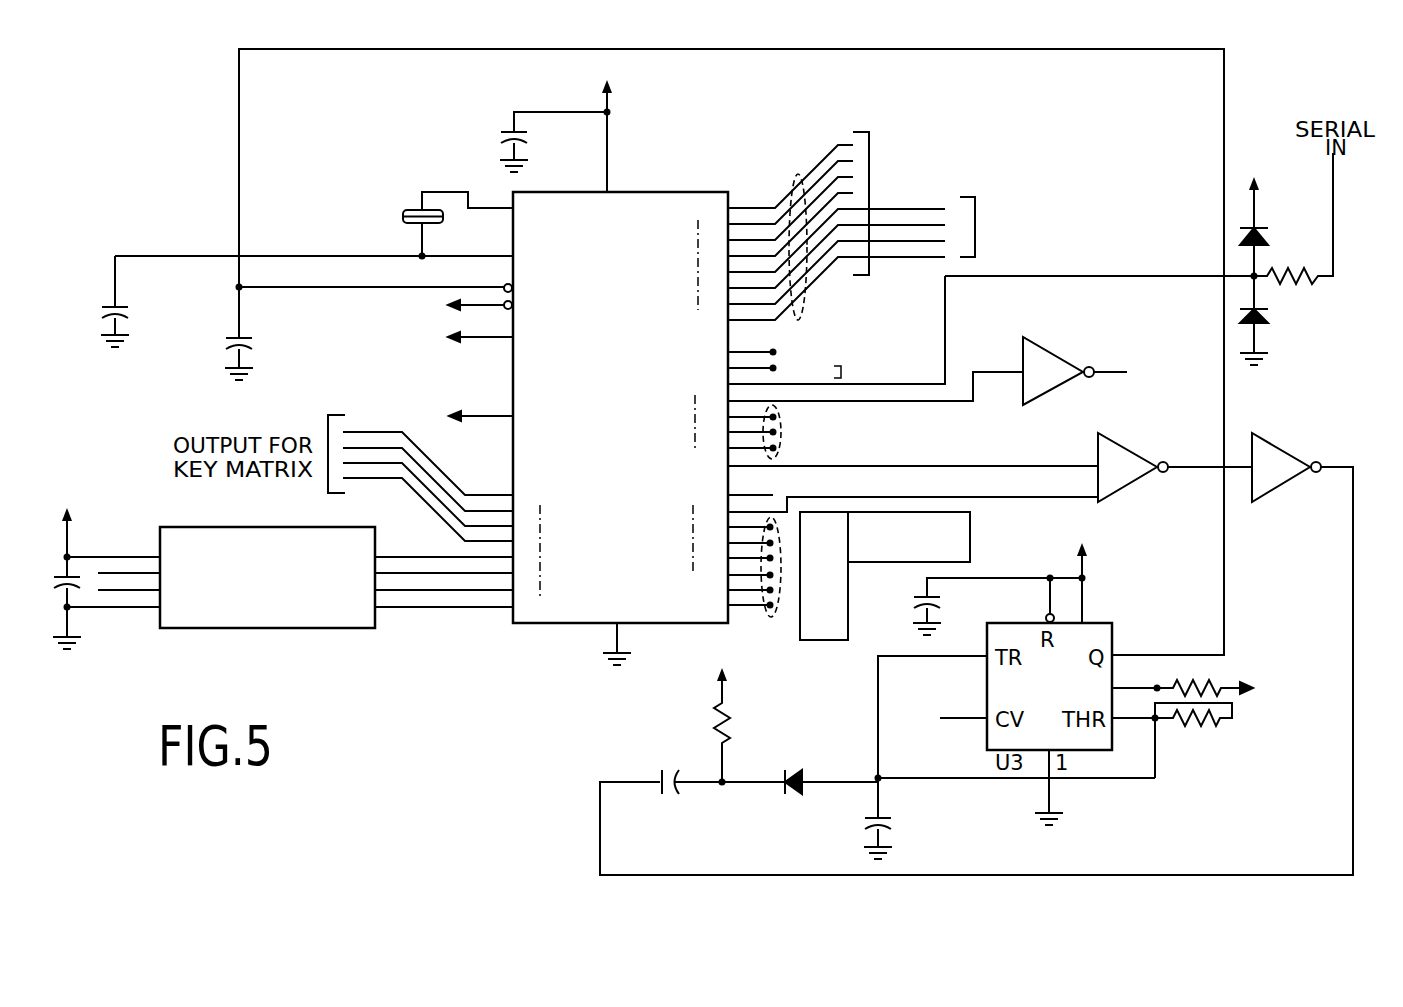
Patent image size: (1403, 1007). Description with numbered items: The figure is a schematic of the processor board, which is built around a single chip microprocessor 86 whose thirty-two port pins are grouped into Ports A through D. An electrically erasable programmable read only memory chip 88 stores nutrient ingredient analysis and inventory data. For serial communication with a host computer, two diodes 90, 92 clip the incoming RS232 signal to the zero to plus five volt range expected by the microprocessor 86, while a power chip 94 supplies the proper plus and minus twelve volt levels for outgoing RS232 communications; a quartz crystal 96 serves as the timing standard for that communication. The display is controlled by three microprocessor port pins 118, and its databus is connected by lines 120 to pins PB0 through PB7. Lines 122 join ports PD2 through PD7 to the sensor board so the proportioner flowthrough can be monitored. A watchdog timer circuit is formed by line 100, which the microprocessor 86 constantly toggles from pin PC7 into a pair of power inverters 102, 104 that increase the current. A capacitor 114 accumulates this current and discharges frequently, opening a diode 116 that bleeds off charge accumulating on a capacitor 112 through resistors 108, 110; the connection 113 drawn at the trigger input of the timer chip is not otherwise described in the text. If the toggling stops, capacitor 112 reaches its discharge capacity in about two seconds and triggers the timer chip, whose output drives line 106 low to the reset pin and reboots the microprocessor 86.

The microprocessor 86 is at (633, 396).
The electrically erasable programmable read only memory chip 88 is at (256, 596).
The diode 90 is at (1258, 228).
The diode 92 is at (1270, 315).
The power chip 94 is at (1052, 352).
The quartz crystal 96 is at (412, 208).
The line 100 is at (1003, 466).
The power inverter 102 is at (1139, 463).
The power inverter 104 is at (1296, 463).
The line 106 is at (378, 287).
The resistor 108 is at (1213, 683).
The resistor 110 is at (1210, 731).
The capacitor 112 is at (888, 815).
The trigger line 113 is at (878, 716).
The capacitor 114 is at (660, 778).
The diode 116 is at (787, 775).
The microprocessor port pins 118 is at (786, 460).
The lines 120 is at (797, 186).
The lines 122 is at (783, 612).